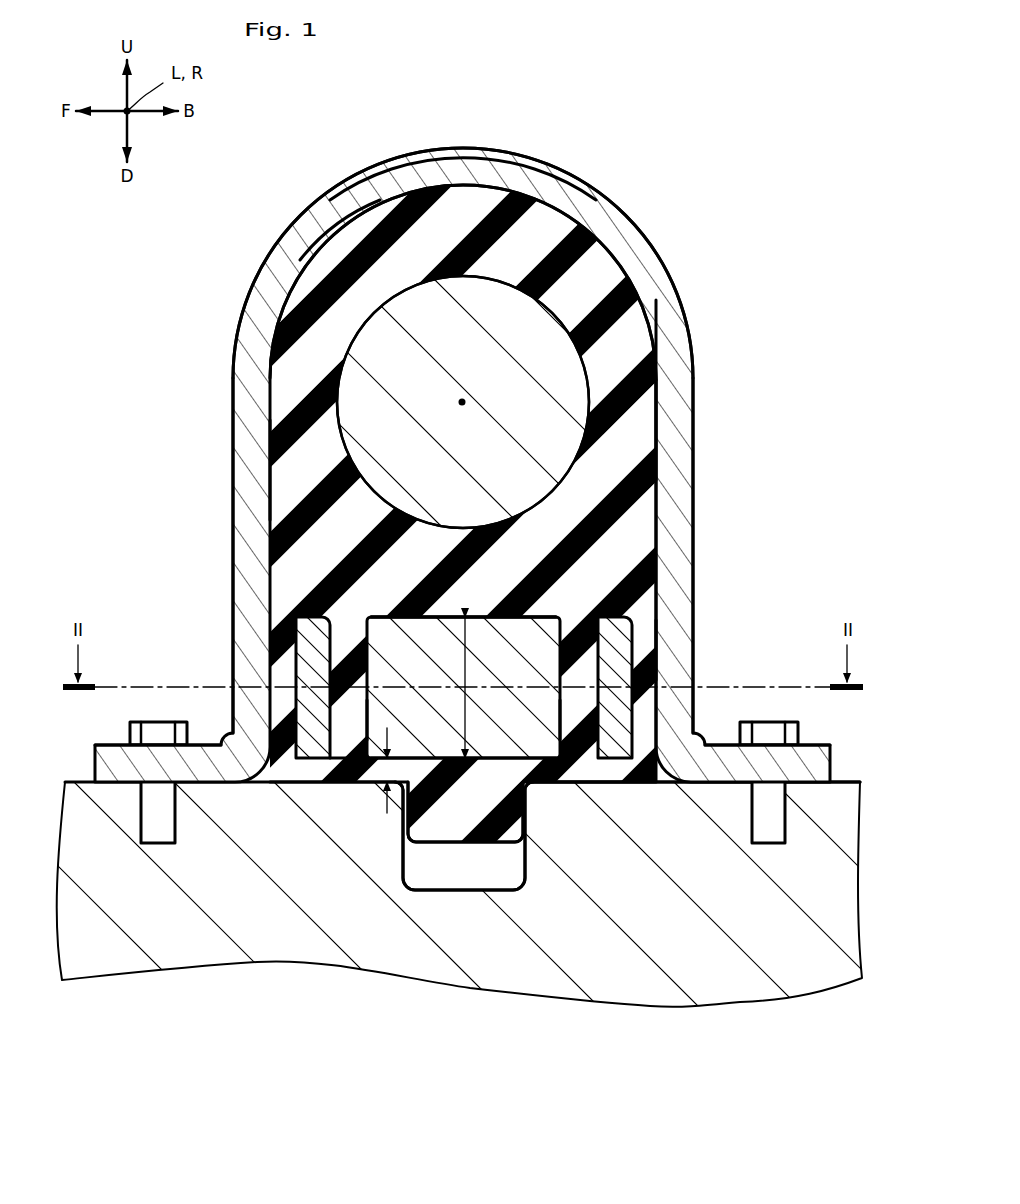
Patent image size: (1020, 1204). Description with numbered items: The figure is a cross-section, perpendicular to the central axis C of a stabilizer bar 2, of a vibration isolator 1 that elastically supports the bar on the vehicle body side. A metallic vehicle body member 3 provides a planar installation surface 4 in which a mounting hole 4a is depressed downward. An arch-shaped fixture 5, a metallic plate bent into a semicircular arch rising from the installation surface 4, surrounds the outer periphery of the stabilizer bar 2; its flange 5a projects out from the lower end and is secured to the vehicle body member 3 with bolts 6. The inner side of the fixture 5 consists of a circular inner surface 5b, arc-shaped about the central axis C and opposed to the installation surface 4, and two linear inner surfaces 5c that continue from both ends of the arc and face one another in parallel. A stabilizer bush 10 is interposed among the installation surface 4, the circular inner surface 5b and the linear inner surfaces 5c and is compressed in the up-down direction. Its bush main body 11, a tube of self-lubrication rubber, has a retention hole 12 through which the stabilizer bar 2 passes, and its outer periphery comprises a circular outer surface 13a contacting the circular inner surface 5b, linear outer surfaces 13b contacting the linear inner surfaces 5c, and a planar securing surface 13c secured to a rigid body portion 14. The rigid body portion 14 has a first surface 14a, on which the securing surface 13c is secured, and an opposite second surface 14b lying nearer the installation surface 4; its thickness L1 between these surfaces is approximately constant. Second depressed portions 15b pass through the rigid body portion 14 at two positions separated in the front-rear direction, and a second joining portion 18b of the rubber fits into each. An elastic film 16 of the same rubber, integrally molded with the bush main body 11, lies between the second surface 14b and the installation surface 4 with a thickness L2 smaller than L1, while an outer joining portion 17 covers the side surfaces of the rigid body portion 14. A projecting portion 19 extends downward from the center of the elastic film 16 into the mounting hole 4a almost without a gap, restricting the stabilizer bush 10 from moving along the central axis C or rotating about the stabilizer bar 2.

The vibration isolator 1 is at (695, 124).
The stabilizer bar 2 is at (528, 331).
The vehicle body member 3 is at (650, 990).
The installation surface 4 is at (600, 776).
The mounting hole 4a is at (412, 888).
The fixture 5 is at (566, 174).
The flange 5a is at (115, 748).
The circular inner surface 5b is at (470, 190).
The linear inner surfaces 5c is at (656, 526).
The bolts 6 is at (158, 827).
The stabilizer bush 10 is at (632, 239).
The bush main body 11 is at (657, 343).
The retention hole 12 is at (388, 489).
The circular outer surface 13a is at (350, 193).
The linear outer surfaces 13b is at (674, 423).
The securing surface 13c is at (437, 619).
The rigid body portion 14 is at (386, 628).
The first surface 14a is at (472, 612).
The second surface 14b is at (498, 761).
The second depressed portions 15b is at (345, 626).
The elastic film 16 is at (312, 768).
The outer joining portion 17 is at (648, 649).
The second joining portion 18b is at (370, 715).
The projecting portion 19 is at (448, 830).
The central axis C is at (466, 402).
The thickness of the rigid body portion L1 is at (467, 659).
The thickness of the elastic film L2 is at (386, 786).